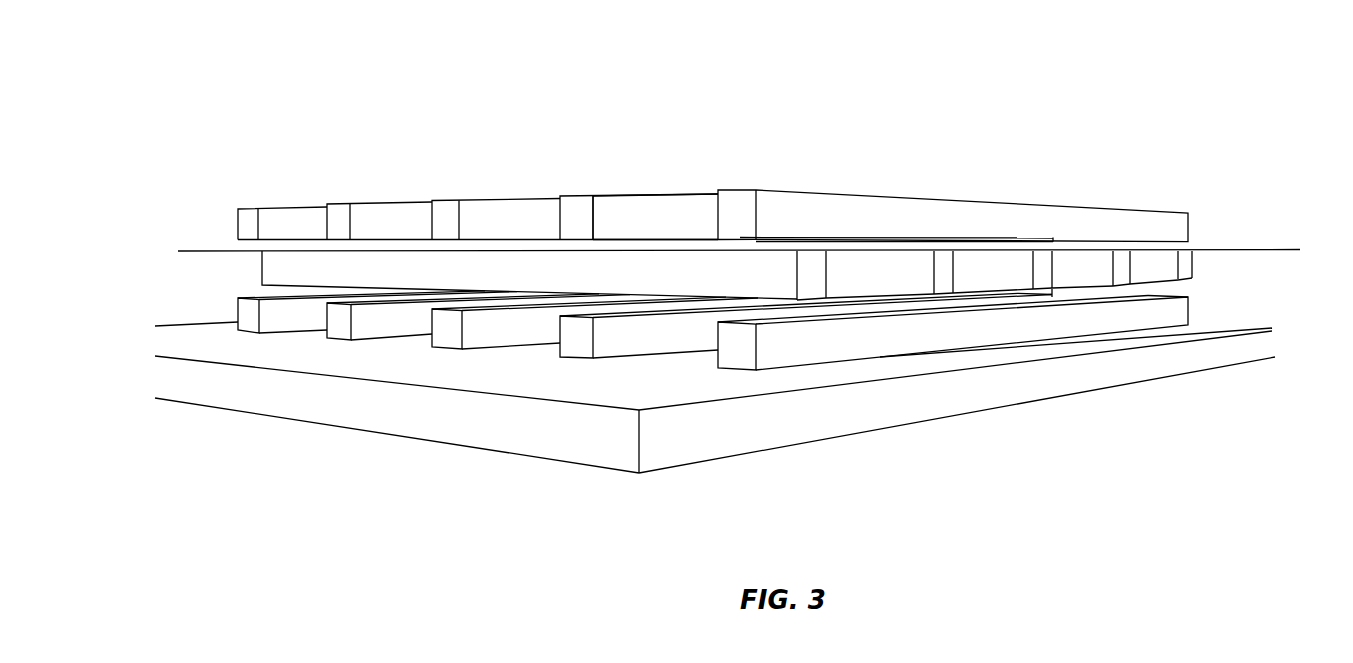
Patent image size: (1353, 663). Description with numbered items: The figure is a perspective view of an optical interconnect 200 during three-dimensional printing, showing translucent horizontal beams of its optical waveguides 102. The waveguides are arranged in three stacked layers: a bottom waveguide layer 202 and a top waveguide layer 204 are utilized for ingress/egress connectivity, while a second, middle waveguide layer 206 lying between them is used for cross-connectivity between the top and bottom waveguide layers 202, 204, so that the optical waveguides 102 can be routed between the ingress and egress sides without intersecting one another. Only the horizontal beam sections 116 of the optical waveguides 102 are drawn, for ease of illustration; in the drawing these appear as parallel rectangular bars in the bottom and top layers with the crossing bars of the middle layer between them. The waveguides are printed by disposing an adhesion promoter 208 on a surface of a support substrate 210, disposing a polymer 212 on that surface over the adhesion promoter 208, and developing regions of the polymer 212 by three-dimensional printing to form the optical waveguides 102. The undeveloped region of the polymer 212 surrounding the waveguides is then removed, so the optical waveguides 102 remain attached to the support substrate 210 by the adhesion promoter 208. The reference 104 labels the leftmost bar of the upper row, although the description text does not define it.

The optical interconnect 200 is at (293, 84).
The optical waveguides 102 is at (628, 193).
The horizontal beam sections 116 is at (676, 219).
The conductive line 104 is at (245, 231).
The top waveguide layer 204 is at (1174, 216).
The polymer 212 is at (229, 276).
The second (middle) waveguide layer 206 is at (1222, 266).
The bottom waveguide layer 202 is at (1161, 313).
The adhesion promoter 208 is at (655, 392).
The support substrate 210 is at (407, 418).